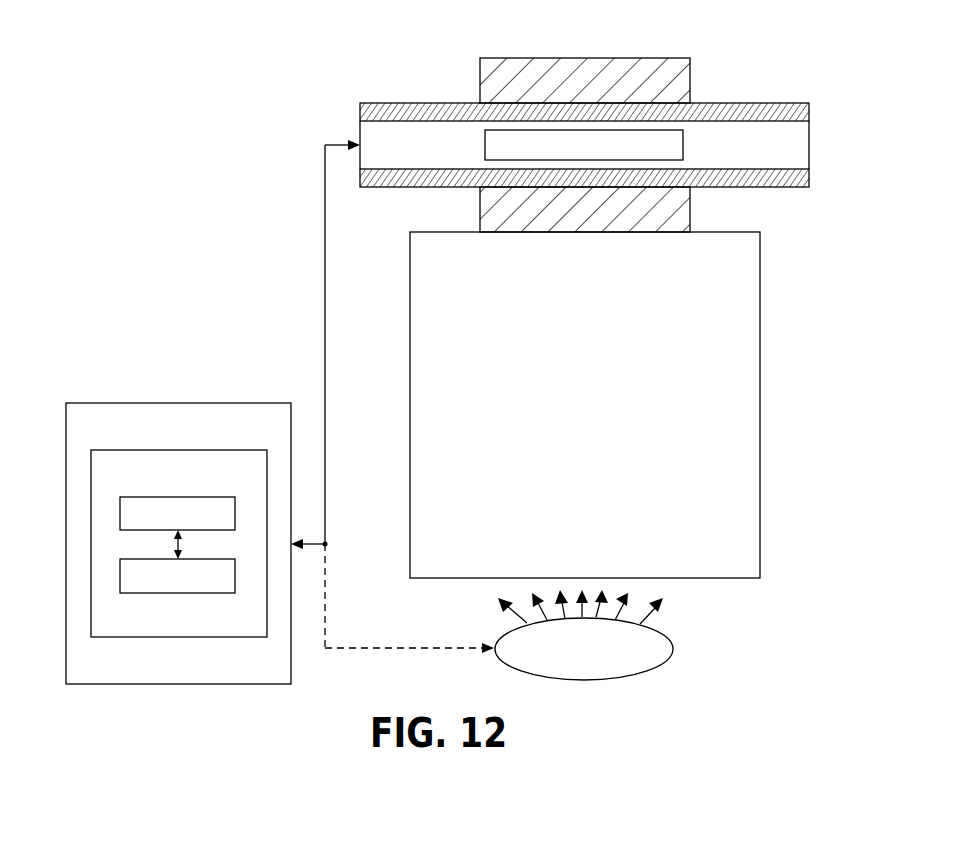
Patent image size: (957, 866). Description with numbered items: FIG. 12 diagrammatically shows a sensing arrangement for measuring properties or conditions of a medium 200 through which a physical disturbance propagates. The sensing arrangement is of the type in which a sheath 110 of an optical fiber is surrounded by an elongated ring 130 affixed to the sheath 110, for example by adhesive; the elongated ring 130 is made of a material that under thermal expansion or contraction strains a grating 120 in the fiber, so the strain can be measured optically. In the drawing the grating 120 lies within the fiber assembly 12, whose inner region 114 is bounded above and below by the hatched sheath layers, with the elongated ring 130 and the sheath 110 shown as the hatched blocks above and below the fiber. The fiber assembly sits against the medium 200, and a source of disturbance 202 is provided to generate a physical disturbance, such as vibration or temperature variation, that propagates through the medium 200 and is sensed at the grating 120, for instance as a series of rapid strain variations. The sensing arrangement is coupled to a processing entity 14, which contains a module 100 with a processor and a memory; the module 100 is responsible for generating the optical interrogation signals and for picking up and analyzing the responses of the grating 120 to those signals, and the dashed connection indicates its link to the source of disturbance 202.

The optical fiber 12 is at (812, 180).
The fiber core 114 is at (796, 146).
The elongated ring 130 is at (581, 68).
The sheath 110 is at (380, 188).
The grating 120 is at (648, 142).
The medium 200 is at (756, 412).
The source of disturbance 202 is at (672, 645).
The processing entity 14 is at (191, 426).
The module 100 is at (196, 475).